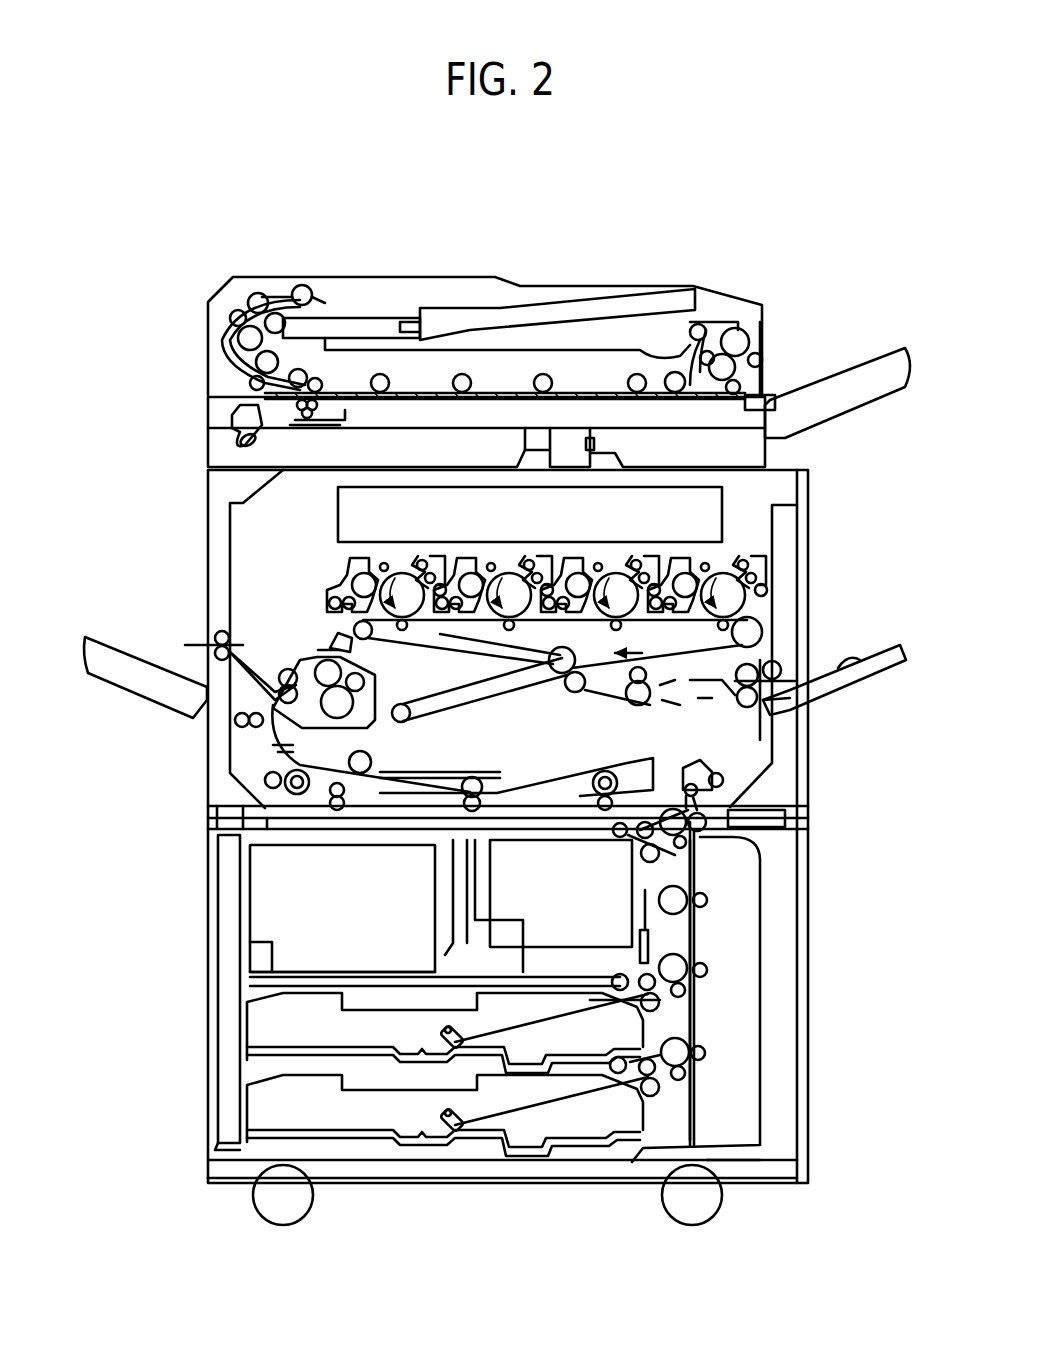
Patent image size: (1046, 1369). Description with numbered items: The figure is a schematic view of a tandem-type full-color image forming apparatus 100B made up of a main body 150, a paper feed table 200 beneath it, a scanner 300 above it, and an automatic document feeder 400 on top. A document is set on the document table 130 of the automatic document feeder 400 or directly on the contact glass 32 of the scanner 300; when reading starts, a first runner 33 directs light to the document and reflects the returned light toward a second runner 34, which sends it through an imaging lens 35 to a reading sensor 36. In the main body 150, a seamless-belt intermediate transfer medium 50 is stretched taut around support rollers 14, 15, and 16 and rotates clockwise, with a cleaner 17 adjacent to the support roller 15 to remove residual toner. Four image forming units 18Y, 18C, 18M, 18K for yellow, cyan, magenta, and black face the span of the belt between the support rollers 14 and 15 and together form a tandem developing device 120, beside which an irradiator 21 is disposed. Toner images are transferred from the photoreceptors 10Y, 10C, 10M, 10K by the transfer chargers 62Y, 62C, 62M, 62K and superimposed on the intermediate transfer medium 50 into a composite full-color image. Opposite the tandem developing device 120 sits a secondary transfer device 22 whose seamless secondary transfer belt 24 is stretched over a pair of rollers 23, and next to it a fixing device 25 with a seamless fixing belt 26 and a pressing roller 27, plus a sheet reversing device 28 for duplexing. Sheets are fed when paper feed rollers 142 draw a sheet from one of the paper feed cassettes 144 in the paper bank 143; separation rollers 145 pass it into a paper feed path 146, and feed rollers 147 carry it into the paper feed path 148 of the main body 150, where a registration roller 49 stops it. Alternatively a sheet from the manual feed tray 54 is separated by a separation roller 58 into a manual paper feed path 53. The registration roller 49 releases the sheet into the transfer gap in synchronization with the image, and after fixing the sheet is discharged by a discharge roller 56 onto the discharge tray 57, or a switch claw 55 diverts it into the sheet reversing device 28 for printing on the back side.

The image forming apparatus 100B is at (763, 212).
The automatic document feeder 400 is at (203, 303).
The scanner 300 is at (203, 418).
The main body 150 is at (203, 545).
The paper feed table 200 is at (203, 915).
The document table 130 is at (470, 288).
The contact glass 32 is at (592, 390).
The first runner 33 is at (312, 425).
The second runner 34 is at (238, 440).
The imaging lens 35 is at (525, 440).
The reading sensor 36 is at (595, 445).
The irradiator 21 is at (725, 502).
The tandem developing device 120 is at (340, 575).
The photoreceptor 10Y is at (398, 573).
The photoreceptor 10C is at (505, 573).
The photoreceptor 10M is at (612, 573).
The photoreceptor 10K is at (719, 573).
The image forming unit 18Y is at (413, 555).
The image forming unit 18C is at (520, 555).
The image forming unit 18M is at (627, 555).
The image forming unit 18K is at (745, 548).
The support roller 14 is at (762, 628).
The transfer charger 62Y is at (405, 628).
The transfer charger 62C is at (512, 630).
The transfer charger 62M is at (614, 628).
The transfer charger 62K is at (721, 628).
The support roller 15 is at (380, 642).
The intermediate transfer medium 50 is at (495, 660).
The support roller 16 is at (565, 688).
The cleaner 17 is at (325, 622).
The secondary transfer device 22 is at (595, 683).
The pair of rollers 23 is at (405, 718).
The secondary transfer belt 24 is at (468, 712).
The fixing device 25 is at (278, 728).
The fixing belt 26 is at (325, 655).
The pressing roller 27 is at (345, 705).
The sheet reversing device 28 is at (505, 818).
The registration roller 49 is at (640, 700).
The manual paper feed path 53 is at (695, 695).
The manual feed tray 54 is at (855, 687).
The switch claw 55 is at (275, 695).
The discharge roller 56 is at (222, 630).
The discharge tray 57 is at (135, 698).
The separation roller 58 is at (760, 720).
The paper feed rollers 142 is at (623, 838).
The paper bank 143 is at (273, 1048).
The paper feed cassettes 144 is at (176, 1090).
The separation rollers 145 is at (650, 863).
The paper feed path 146 is at (695, 938).
The feed rollers 147 is at (703, 833).
The paper feed path 148 is at (705, 770).